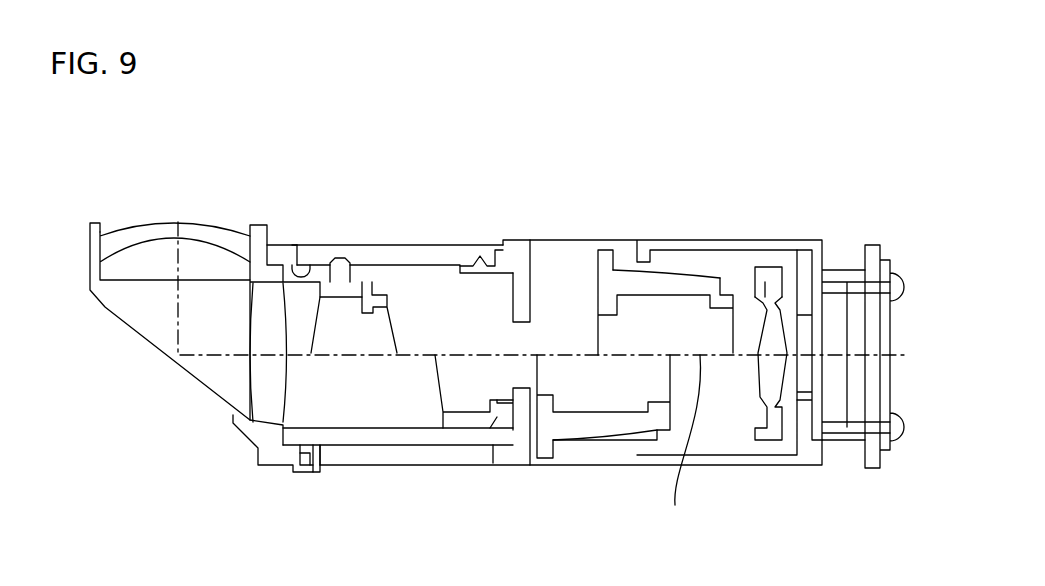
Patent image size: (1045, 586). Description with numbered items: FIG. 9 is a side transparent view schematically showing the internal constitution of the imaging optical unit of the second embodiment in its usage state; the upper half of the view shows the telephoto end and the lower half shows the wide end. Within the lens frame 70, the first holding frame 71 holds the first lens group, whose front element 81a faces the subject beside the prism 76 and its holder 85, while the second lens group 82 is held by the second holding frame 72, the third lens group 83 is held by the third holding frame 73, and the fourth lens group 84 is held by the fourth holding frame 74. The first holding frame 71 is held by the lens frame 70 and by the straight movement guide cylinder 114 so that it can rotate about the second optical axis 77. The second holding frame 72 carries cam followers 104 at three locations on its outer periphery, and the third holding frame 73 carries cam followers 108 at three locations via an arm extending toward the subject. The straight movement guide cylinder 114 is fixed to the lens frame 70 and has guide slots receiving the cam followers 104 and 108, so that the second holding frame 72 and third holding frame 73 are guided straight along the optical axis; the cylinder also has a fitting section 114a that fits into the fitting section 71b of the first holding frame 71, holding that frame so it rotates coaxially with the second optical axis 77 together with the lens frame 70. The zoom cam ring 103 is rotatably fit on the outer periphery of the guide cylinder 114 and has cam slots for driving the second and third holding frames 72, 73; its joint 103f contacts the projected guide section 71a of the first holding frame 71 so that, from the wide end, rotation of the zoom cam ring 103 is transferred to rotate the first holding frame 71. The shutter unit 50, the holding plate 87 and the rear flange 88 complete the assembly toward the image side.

The lens frame 70 is at (768, 455).
The first holding frame 71 is at (247, 223).
The projected guide section 71a is at (303, 476).
The fitting section 71b is at (296, 245).
The second holding frame 72 is at (372, 290).
The third holding frame 73 is at (703, 283).
The fourth holding frame 74 is at (757, 278).
The prism 76 is at (173, 313).
The second optical axis 77 is at (683, 443).
The front lens 81a is at (130, 227).
The second lens group 82 is at (338, 315).
The third lens group 83 is at (663, 310).
The fourth lens group 84 is at (772, 282).
The prism holder 85 is at (227, 380).
The holding plate 87 is at (803, 330).
The rear flange / image sensor board 88 is at (833, 297).
The shutter unit 50 is at (520, 452).
The zoom cam ring 103 is at (398, 260).
The joint 103f is at (316, 470).
The cam followers 104 is at (338, 262).
The cam followers 108 is at (481, 256).
The straight movement guide cylinder 114 is at (451, 262).
The fitting section 114a is at (280, 231).